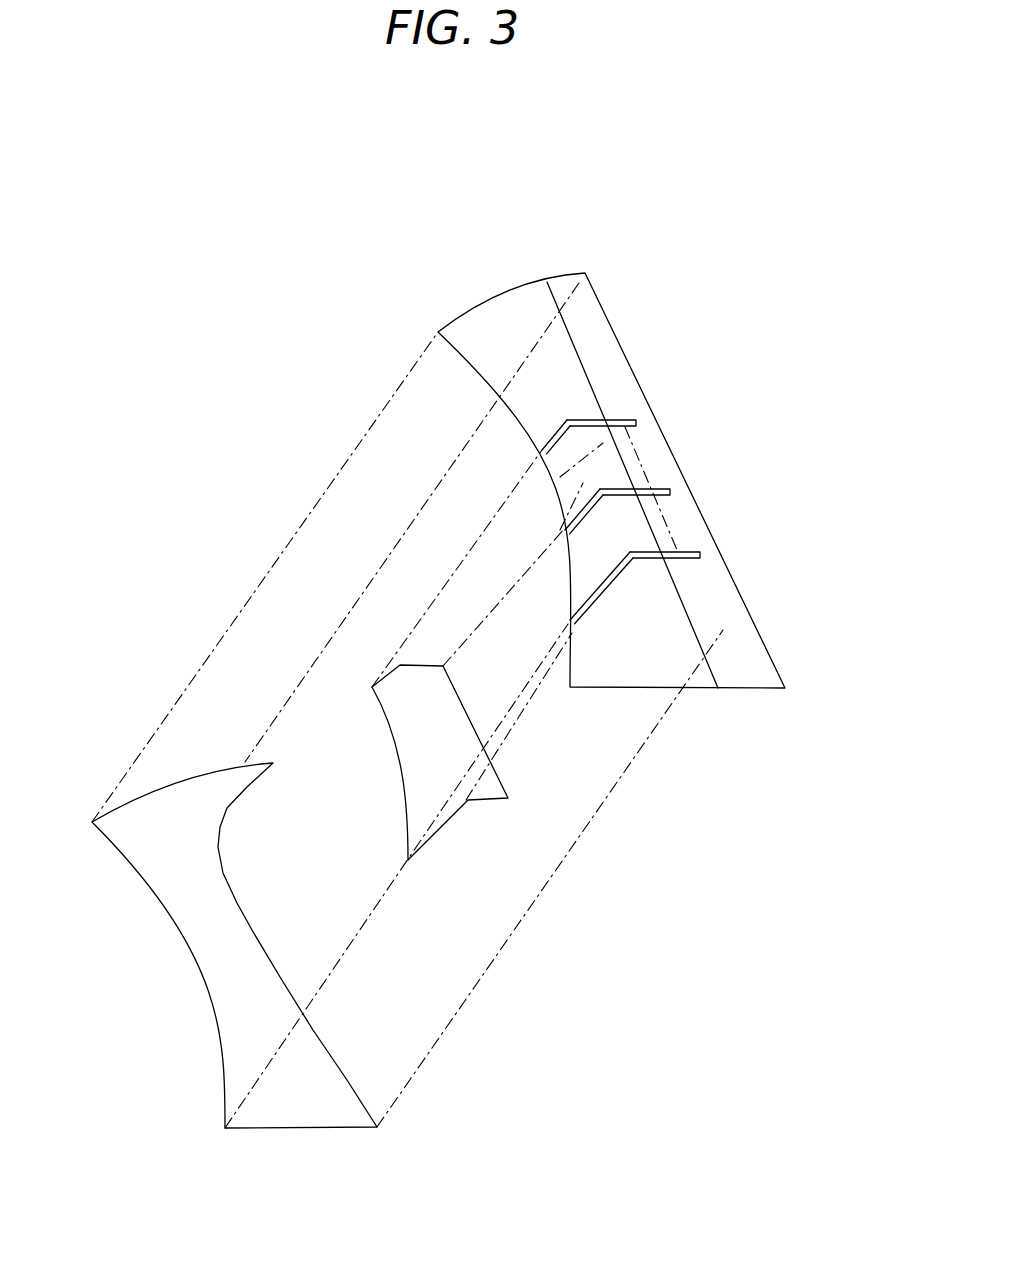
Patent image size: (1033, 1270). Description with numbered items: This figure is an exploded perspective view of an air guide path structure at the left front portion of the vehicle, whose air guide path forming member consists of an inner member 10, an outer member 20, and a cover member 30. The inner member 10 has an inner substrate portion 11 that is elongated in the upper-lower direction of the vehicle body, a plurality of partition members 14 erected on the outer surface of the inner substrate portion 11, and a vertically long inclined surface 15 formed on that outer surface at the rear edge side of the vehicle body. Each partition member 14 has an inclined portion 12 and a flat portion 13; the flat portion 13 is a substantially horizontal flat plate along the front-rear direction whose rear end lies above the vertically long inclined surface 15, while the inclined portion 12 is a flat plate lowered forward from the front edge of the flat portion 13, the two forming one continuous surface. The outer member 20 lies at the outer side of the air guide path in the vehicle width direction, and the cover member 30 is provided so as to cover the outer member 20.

The inner member 10 is at (667, 307).
The inner substrate portion 11 is at (505, 323).
The inclined portion 12 is at (548, 445).
The flat portion 13 is at (585, 418).
The partition member 14 is at (323, 305).
The vertically long inclined surface 15 is at (695, 583).
The outer member 20 is at (400, 773).
The cover member 30 is at (226, 996).